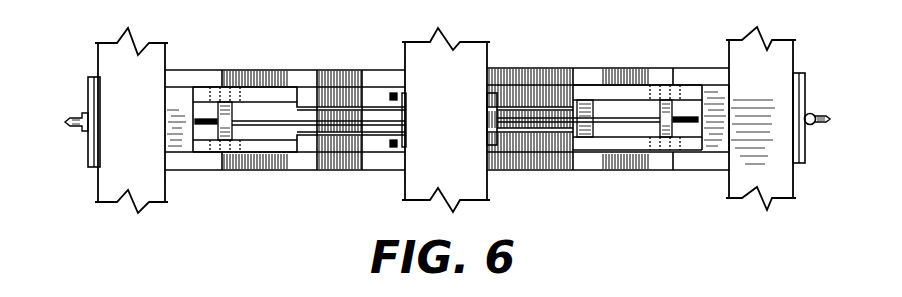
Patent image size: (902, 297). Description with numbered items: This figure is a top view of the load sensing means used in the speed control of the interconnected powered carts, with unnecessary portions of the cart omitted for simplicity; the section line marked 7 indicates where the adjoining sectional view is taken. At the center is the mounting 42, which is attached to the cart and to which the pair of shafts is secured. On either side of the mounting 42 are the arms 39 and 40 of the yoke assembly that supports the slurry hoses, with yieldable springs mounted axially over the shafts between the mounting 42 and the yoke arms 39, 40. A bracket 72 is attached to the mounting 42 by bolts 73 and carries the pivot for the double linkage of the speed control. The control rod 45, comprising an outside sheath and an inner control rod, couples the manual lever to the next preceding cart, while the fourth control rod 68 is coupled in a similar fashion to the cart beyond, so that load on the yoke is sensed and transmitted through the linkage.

The yoke arm 40 is at (147, 53).
The mounting 42 is at (420, 52).
The yoke arm 39 is at (738, 50).
The fourth control rod 68 is at (72, 125).
The control rod 45 is at (830, 120).
The bracket 72 is at (353, 107).
The bolts 73 is at (392, 92).
The section line 7- 7 is at (63, 127).